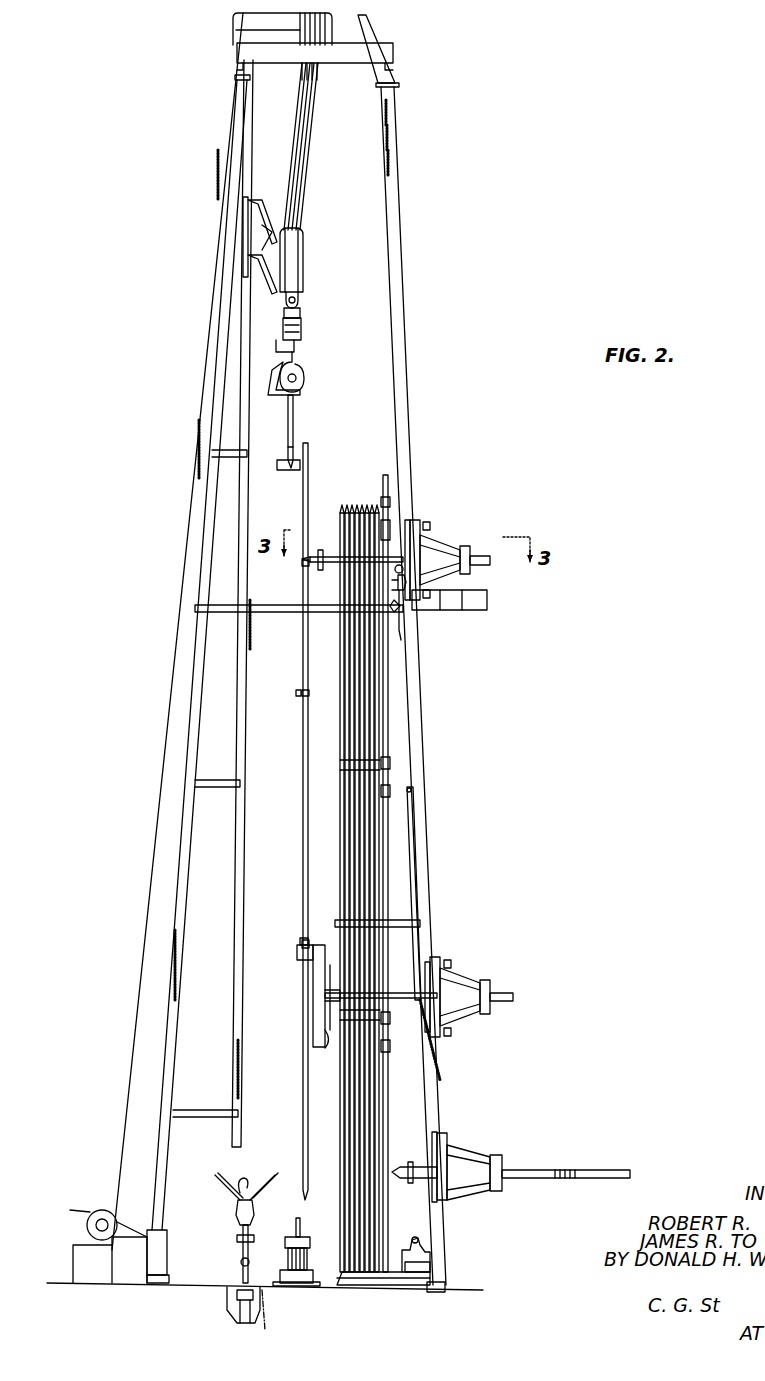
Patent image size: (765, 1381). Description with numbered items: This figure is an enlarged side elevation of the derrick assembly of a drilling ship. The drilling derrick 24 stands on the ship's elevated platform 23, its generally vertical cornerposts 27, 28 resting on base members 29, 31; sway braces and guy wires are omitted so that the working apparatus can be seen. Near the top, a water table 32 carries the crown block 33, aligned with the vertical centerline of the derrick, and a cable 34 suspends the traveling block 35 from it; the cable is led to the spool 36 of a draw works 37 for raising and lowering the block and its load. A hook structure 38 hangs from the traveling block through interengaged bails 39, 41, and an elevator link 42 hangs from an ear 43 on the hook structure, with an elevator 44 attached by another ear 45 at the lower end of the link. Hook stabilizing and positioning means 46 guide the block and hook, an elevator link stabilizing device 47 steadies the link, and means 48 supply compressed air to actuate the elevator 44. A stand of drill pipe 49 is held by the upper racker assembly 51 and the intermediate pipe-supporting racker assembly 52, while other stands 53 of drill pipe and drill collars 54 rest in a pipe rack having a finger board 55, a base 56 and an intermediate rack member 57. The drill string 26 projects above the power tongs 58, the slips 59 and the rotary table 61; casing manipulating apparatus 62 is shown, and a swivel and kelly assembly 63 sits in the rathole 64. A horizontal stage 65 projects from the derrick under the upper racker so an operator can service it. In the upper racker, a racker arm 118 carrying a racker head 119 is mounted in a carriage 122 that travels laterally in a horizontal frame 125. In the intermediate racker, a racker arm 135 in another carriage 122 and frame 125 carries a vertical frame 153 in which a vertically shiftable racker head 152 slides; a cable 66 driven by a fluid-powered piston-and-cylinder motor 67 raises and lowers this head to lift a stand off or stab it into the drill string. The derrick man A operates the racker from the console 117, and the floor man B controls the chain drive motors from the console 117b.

The elevated platform 23 is at (478, 1288).
The drilling derrick 24 is at (434, 213).
The drill string 26 is at (300, 1225).
The cornerpost 27 is at (438, 1076).
The cornerpost 28 is at (194, 956).
The base member 29 is at (437, 1293).
The base member 31 is at (152, 1284).
The water table 32 is at (393, 55).
The crown block 33 is at (332, 28).
The cable 34 is at (314, 143).
The traveling block 35 is at (322, 246).
The spool 36 is at (92, 1210).
The draw works 37 is at (70, 1250).
The hook structure 38 is at (316, 331).
The bail 39 is at (300, 313).
The bail 41 is at (300, 296).
The elevator link 42 is at (300, 414).
The ear 43 is at (300, 360).
The elevator 44 is at (283, 463).
The ear 45 is at (281, 481).
The hook stabilizing and positioning means 46 is at (240, 253).
The elevator link stabilizing device 47 is at (262, 377).
The air supply means 48 is at (268, 345).
The stand of drill pipe 49 is at (298, 672).
The upper racker assembly 51 is at (446, 530).
The intermediate pipe-supporting racker assembly 52 is at (516, 955).
The stands of drill pipe 53 is at (350, 507).
The drill collars 54 is at (386, 492).
The finger board 55 is at (332, 600).
The base 56 is at (368, 1288).
The intermediate rack member 57 is at (398, 930).
The power tongs 58 is at (306, 1245).
The slips 59 is at (284, 1270).
The rotary table 61 is at (308, 1290).
The casing manipulating apparatus 62 is at (512, 1140).
The swivel and kelly assembly 63 is at (238, 1240).
The rathole 64 is at (232, 1310).
The horizontal stage 65 is at (482, 614).
The cable 66 is at (311, 943).
The fluid-powered piston-and-cylinder motor 67 is at (413, 840).
The console 117 is at (396, 588).
The console 117b is at (404, 1248).
The racker arm 118 is at (320, 550).
The racker head 119 is at (305, 564).
The carriage 122 is at (465, 546).
The horizontal track means or frame 125 is at (428, 522).
The racker arm 135 is at (329, 1035).
The racker head 152 is at (297, 958).
The vertical frame 153 is at (313, 1022).
The derrick man A is at (405, 603).
The floor man B is at (428, 1262).